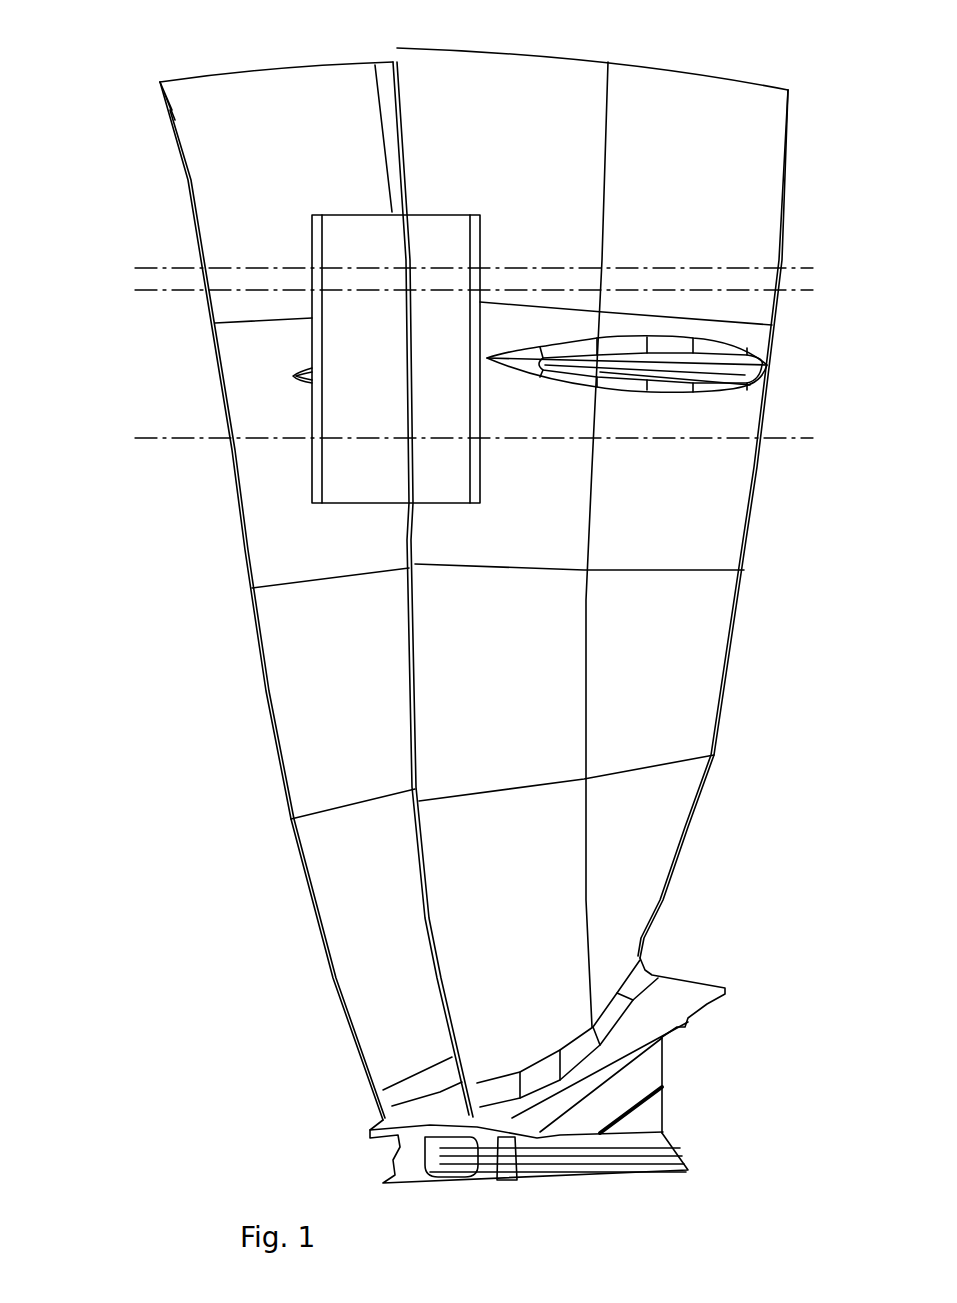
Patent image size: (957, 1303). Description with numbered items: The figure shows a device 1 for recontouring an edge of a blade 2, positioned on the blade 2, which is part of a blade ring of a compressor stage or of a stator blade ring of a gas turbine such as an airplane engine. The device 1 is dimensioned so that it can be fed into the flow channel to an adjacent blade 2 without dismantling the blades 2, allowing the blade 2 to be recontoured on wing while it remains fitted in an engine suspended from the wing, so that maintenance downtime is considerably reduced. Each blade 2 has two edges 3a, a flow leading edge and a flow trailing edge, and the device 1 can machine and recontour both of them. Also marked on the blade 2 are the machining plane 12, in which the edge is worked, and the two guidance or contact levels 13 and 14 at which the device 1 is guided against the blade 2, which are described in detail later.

The device 1 is at (353, 470).
The blade 2 is at (254, 708).
The edge 3a is at (160, 86).
The machining plane 12 is at (185, 289).
The guidance or contact level 13 is at (225, 268).
The guidance or contact level 14 is at (207, 438).